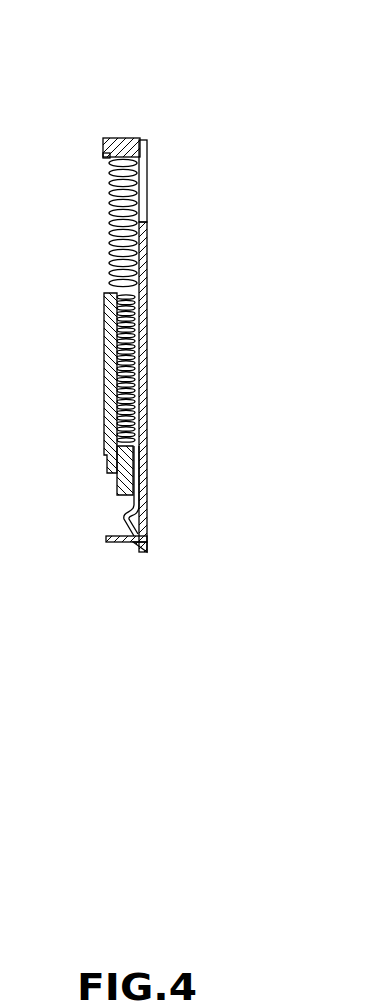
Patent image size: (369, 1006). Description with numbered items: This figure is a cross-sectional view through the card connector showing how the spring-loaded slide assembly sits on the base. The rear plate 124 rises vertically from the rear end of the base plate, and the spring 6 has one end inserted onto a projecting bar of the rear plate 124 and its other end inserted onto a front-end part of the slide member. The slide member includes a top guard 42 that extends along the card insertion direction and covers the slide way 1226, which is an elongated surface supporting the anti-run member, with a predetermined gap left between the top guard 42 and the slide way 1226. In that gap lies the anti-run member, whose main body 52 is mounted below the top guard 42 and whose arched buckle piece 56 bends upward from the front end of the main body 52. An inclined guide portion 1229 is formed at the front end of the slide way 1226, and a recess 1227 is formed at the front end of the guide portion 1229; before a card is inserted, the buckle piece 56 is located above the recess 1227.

The rear plate 124 is at (114, 139).
The spring 6 is at (141, 222).
The main body 52 is at (141, 418).
The slide way 1226 is at (139, 362).
The guide portion 1229 is at (139, 490).
The top guard 42 is at (133, 490).
The buckle piece 56 is at (125, 518).
The recess 1227 is at (139, 528).